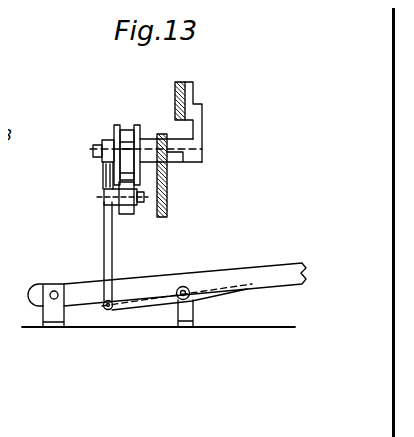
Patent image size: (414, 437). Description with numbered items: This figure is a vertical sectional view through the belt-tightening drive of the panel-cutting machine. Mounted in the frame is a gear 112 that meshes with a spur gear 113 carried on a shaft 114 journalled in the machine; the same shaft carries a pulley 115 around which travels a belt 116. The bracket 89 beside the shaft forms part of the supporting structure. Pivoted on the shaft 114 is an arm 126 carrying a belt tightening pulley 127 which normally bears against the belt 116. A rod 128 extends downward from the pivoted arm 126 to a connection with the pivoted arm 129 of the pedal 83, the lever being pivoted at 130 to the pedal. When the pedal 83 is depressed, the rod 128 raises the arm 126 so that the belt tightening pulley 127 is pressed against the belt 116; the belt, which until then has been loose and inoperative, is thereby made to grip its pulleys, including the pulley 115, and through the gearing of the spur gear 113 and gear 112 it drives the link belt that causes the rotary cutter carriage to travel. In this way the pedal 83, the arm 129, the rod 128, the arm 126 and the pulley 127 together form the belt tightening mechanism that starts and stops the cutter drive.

The pedal 83 is at (223, 265).
The bracket 89 is at (175, 90).
The gear 112 is at (166, 192).
The spur gear 113 is at (168, 158).
The shaft 114 is at (90, 149).
The pulley 115 is at (118, 135).
The belt 116 is at (128, 128).
The pivoted arm 126 is at (108, 182).
The belt tightening pulley 127 is at (128, 213).
The rod 128 is at (103, 245).
The pivoted arm of the pedal 129 is at (142, 303).
The pivot 130 is at (186, 295).